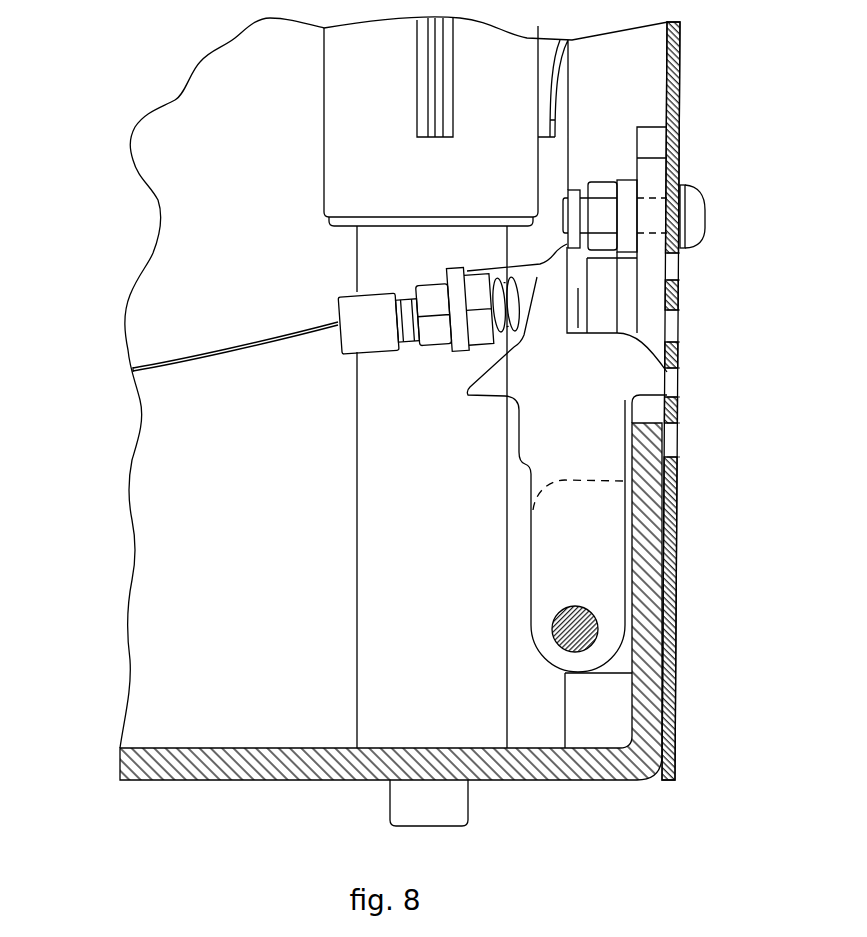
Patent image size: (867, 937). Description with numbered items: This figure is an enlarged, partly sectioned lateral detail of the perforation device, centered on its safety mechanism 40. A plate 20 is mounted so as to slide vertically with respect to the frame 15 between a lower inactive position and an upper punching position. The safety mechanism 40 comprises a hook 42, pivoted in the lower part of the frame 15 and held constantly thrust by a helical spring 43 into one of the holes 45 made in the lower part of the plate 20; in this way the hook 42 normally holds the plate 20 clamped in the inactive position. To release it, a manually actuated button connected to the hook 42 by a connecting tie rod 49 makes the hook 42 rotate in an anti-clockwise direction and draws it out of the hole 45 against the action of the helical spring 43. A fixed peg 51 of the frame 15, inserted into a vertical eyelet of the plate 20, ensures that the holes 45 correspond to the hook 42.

The safety mechanism 40 is at (114, 266).
The frame 15 is at (248, 763).
The plate 20 is at (668, 145).
The fixed peg 51 is at (696, 218).
The hole 45 is at (668, 282).
The hook 42 is at (577, 433).
The helical spring 43 is at (477, 353).
The connecting tie rod 49 is at (223, 348).